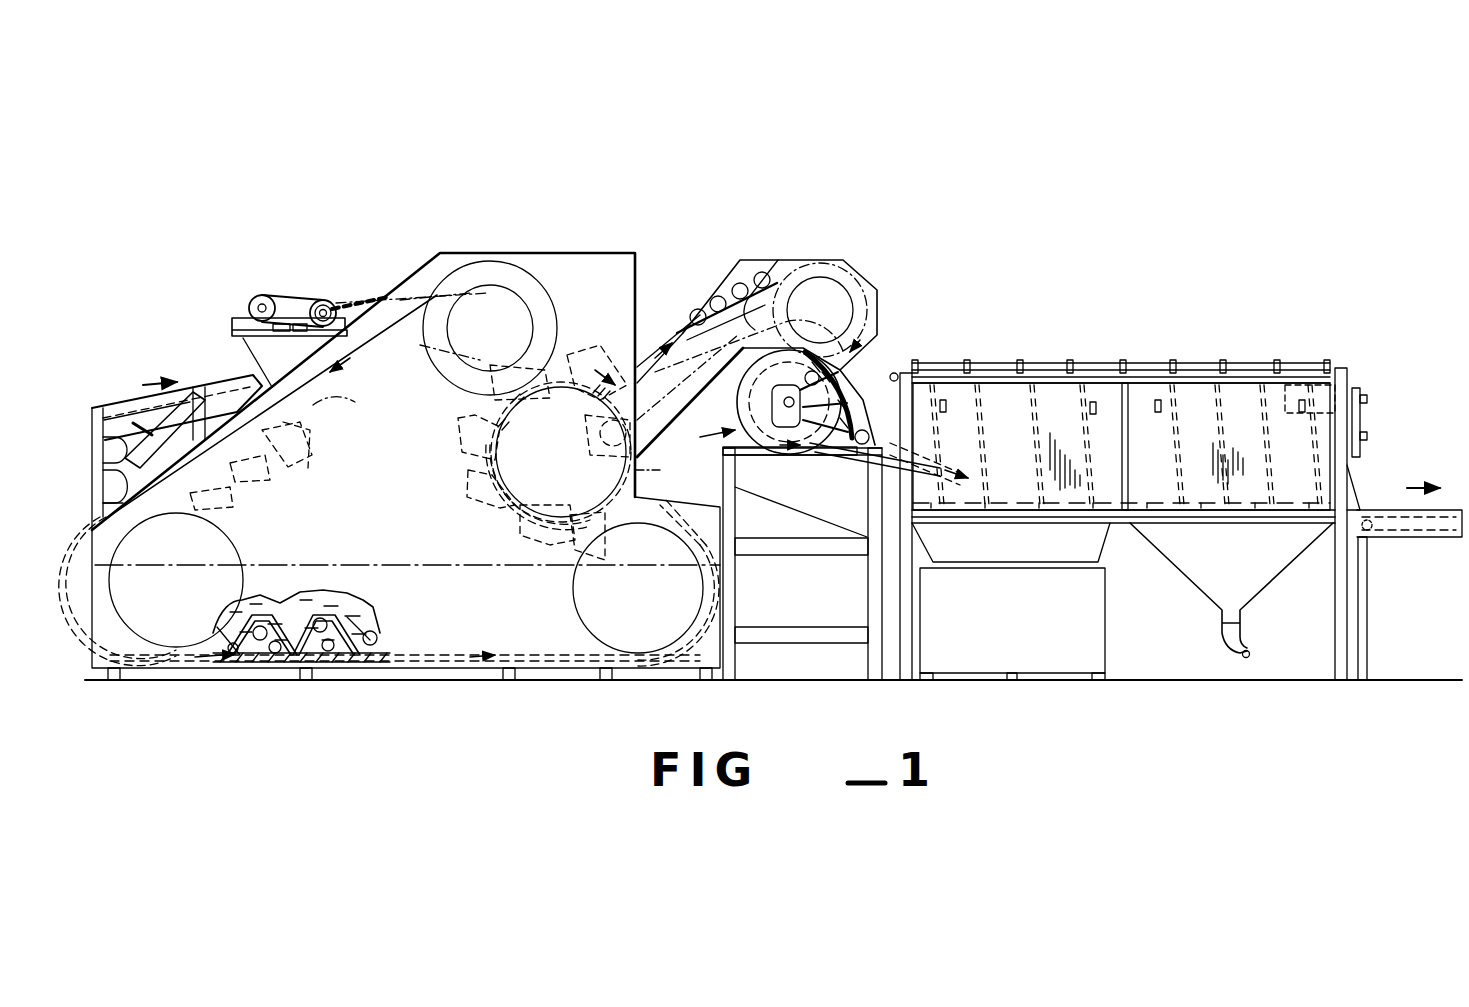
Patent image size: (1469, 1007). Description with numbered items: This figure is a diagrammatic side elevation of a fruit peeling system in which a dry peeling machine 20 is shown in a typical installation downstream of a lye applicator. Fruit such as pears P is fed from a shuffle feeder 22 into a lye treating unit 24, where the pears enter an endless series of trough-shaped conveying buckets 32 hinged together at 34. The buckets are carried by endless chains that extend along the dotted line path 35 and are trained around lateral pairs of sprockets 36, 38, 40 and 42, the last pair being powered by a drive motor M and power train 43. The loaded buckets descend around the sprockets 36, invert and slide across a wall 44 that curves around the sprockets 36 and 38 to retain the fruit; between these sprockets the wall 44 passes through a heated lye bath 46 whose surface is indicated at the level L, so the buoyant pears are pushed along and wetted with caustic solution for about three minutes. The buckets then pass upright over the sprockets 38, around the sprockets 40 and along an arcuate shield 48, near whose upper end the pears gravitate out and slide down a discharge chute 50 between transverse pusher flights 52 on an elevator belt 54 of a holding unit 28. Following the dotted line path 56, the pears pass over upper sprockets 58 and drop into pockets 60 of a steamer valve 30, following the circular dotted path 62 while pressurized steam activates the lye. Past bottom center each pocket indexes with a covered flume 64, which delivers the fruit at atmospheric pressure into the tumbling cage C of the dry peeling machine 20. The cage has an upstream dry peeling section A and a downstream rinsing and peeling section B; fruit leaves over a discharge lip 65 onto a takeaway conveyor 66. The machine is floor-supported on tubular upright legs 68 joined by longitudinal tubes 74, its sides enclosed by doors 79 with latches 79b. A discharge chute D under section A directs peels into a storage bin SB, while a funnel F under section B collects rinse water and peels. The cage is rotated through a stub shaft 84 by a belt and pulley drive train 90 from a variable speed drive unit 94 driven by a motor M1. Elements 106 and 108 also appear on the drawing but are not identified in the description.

The dry peeling machine 20 is at (1255, 330).
The shuffle feeder 22 is at (223, 387).
The lye treating unit 24 is at (492, 250).
The holding unit 28 is at (740, 257).
The steamer valve 30 is at (745, 442).
The conveying buckets 32 is at (300, 462).
The hinge 34 is at (270, 653).
The dotted line path 35 is at (343, 413).
The sprockets 36 is at (230, 522).
The sprockets 38 is at (573, 583).
The sprockets 40 is at (662, 469).
The sprockets 42 is at (433, 368).
The power train 43 is at (331, 301).
The wall 44 is at (390, 653).
The heated lye bath 46 is at (242, 594).
The arcuate shield 48 is at (500, 440).
The discharge chute 50 is at (585, 395).
The transverse pusher flights 52 is at (710, 314).
The elevator belt 54 is at (668, 332).
The dotted line path 56 is at (855, 267).
The upper sprockets 58 is at (793, 288).
The pockets 60 is at (835, 375).
The circular dotted path 62 is at (699, 438).
The covered flume 64 is at (857, 463).
The discharge lip 65 is at (1350, 483).
The takeaway conveyor 66 is at (1440, 517).
The tubular upright legs 68 is at (873, 592).
The longitudinal tubes 74 is at (1283, 380).
The doors 79 is at (1148, 505).
The latches 79b is at (945, 412).
The stub shaft 84 is at (1365, 437).
The belt and pulley drive train 90 is at (1365, 422).
The variable speed drive unit 94 is at (1347, 380).
The rail clips 106 is at (916, 365).
The rail 108 is at (1147, 366).
The drive motor M is at (254, 294).
The motor M1 is at (1327, 377).
The pears P is at (320, 633).
The dry peeling section A is at (1004, 366).
The rinsing and peeling section B is at (1208, 368).
The tumbling cage C is at (1075, 357).
The discharge chute D is at (1024, 553).
The funnel F is at (1232, 559).
The level L is at (383, 550).
The storage bin SB is at (1026, 619).